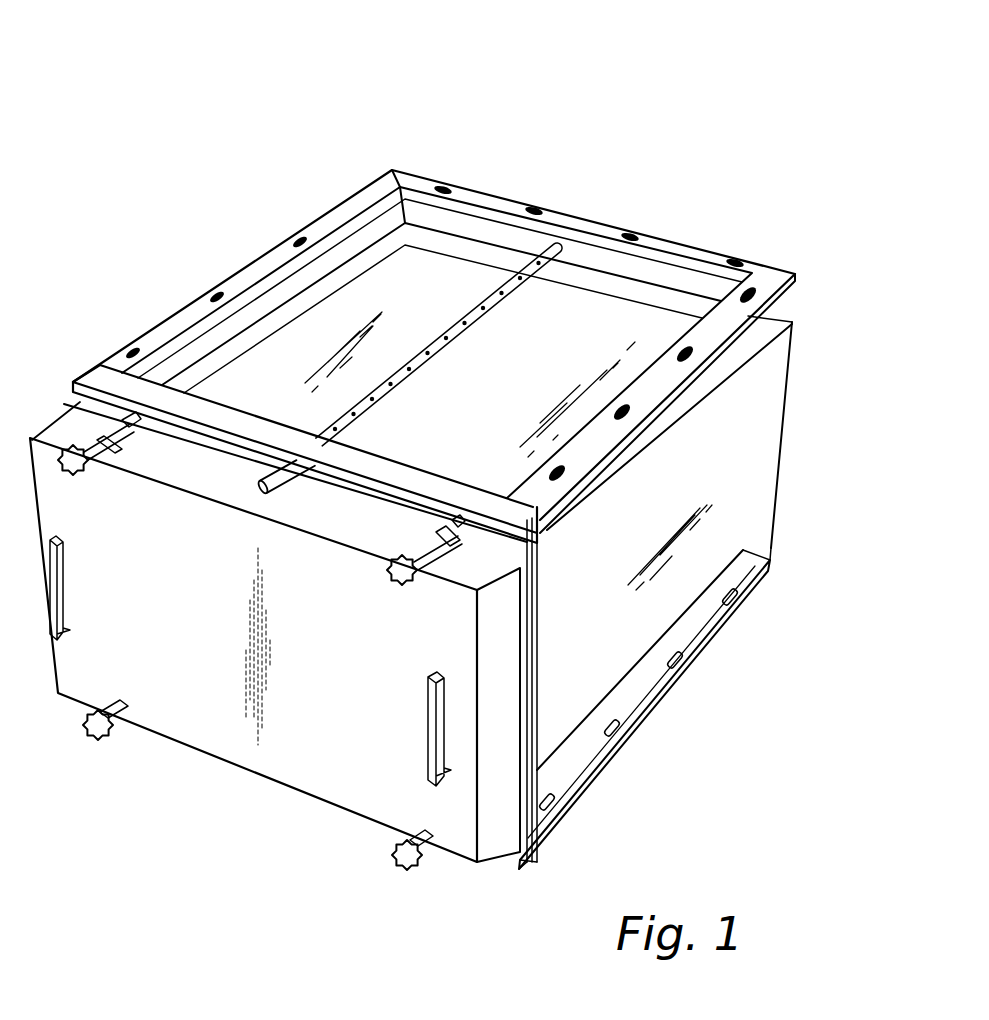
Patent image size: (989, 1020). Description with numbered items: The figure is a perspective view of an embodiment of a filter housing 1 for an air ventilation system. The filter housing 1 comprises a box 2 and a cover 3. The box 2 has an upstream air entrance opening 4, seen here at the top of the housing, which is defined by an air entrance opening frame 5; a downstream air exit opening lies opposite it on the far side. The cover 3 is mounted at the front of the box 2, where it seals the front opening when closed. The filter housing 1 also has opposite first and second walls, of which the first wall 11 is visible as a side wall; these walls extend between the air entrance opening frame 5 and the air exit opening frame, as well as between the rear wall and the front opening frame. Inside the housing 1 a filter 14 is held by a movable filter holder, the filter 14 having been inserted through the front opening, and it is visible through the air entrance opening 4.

The filter housing 1 is at (212, 147).
The box 2 is at (753, 402).
The cover 3 is at (318, 752).
The air entrance opening 4 is at (598, 338).
The air entrance opening frame 5 is at (571, 223).
The first wall 11 is at (750, 458).
The filter 14 is at (437, 276).